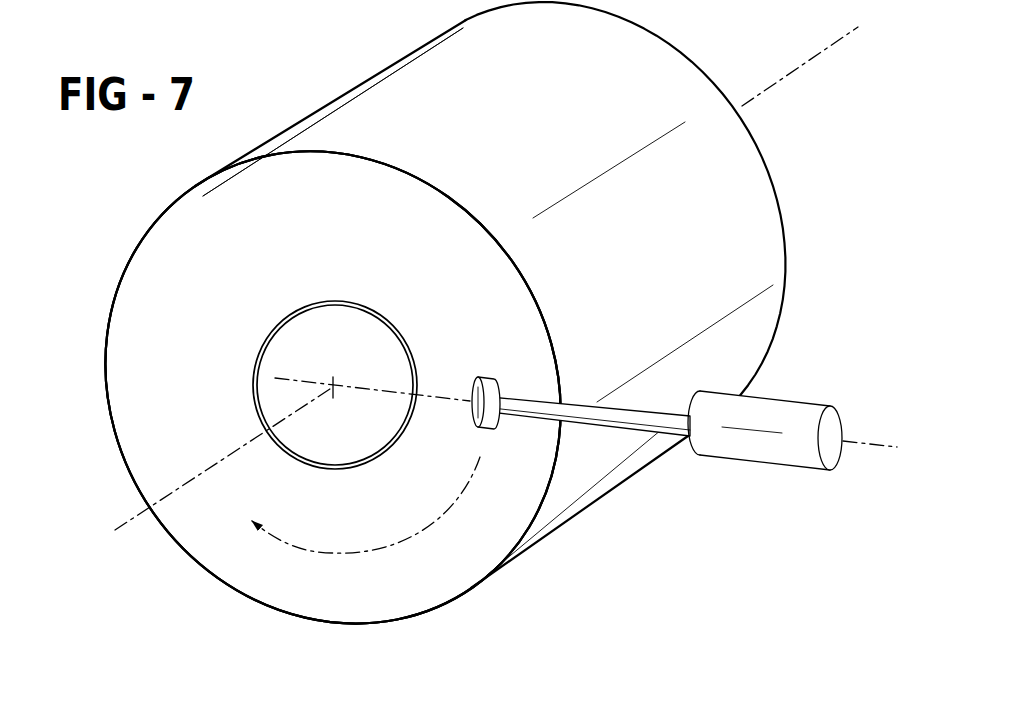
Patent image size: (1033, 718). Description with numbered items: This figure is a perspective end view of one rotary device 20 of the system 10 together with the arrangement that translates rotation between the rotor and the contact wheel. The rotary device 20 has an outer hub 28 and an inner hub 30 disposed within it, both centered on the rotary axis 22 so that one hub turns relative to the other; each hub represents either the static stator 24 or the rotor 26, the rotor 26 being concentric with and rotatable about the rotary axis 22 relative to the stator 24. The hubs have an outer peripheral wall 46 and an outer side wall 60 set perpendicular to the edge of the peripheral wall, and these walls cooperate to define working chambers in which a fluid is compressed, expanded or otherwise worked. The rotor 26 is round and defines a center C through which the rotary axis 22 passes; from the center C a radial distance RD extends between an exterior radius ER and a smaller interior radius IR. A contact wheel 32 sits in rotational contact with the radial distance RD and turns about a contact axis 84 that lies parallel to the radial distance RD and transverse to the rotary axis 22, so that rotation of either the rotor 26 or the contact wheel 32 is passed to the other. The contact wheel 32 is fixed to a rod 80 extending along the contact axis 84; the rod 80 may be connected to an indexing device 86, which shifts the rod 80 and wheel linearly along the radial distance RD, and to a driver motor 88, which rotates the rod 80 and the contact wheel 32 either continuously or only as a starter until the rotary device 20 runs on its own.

The system 10 is at (586, 460).
The rotary device 20 is at (436, 357).
The rotary axis 22 is at (126, 509).
The stator 24 is at (235, 332).
The rotor 26 is at (127, 347).
The outer hub 28 is at (202, 238).
The inner hub 30 is at (278, 397).
The contact wheel 32 is at (480, 423).
The outer peripheral wall 46 is at (733, 162).
The outer side wall 60 is at (221, 563).
The rod 80 is at (637, 420).
The contact axis 84 is at (881, 434).
The indexing device 86 is at (787, 412).
The driver motor 88 is at (765, 396).
The center C is at (328, 383).
The radial distance RD is at (383, 169).
The exterior radius ER is at (510, 260).
The interior radius IR is at (393, 345).